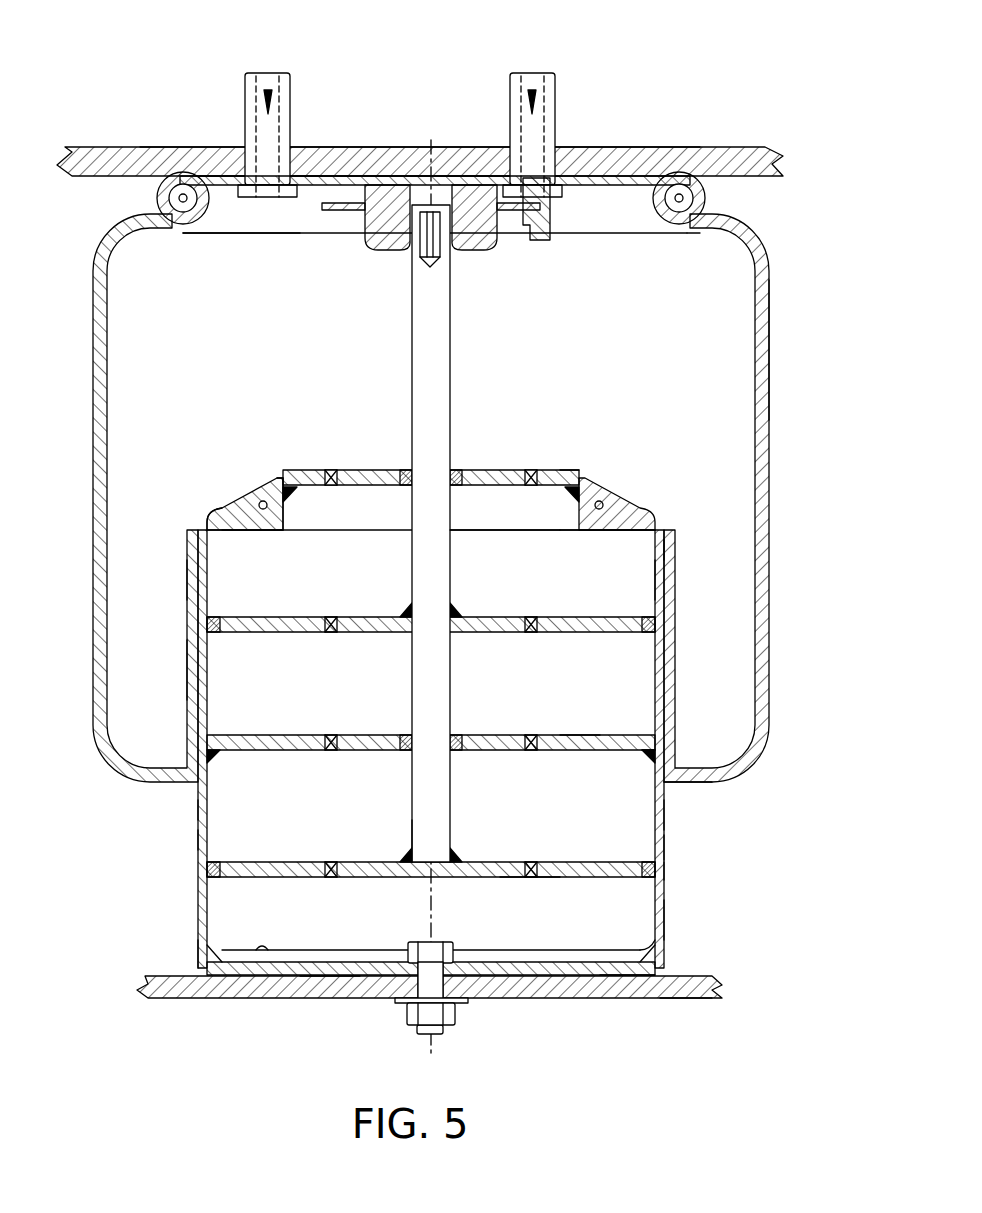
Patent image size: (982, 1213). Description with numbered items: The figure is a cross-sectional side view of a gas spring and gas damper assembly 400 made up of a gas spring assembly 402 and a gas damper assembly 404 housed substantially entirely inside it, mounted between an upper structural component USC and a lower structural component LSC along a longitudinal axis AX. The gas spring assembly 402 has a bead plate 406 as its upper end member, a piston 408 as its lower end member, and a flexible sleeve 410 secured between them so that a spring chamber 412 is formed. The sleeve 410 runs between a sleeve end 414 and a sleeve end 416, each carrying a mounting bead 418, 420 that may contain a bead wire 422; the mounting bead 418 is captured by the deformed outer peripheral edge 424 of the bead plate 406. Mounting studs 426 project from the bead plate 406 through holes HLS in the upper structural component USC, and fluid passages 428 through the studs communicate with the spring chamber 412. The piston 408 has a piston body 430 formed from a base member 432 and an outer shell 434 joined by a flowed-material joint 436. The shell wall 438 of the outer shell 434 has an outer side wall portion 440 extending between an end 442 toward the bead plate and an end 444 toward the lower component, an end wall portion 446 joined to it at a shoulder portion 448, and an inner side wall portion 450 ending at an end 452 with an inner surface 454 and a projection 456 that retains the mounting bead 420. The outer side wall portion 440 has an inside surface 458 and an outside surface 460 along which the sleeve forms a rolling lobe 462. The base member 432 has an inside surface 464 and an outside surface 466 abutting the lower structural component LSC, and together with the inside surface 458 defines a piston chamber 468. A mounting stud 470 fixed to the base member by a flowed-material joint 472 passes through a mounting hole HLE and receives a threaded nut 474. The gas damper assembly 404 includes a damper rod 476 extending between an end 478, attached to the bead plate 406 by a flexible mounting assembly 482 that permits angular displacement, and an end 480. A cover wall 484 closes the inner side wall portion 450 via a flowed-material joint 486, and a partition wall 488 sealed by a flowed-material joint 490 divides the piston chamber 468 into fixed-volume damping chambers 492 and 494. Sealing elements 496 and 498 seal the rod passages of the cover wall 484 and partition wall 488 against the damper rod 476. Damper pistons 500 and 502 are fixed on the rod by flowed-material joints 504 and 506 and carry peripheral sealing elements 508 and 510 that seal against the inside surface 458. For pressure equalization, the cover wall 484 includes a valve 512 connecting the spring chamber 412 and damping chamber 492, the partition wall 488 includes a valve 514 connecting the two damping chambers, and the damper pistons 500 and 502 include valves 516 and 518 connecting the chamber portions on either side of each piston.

The gas spring and gas damper assembly 400 is at (772, 272).
The gas spring assembly 402 is at (92, 385).
The gas damper assembly 404 is at (196, 836).
The bead plate 406 is at (647, 160).
The piston 408 is at (667, 847).
The flexible spring member (flexible sleeve) 410 is at (771, 485).
The spring chamber 412 is at (766, 305).
The sleeve end 414 is at (660, 255).
The sleeve end 416 is at (677, 505).
The mounting bead 418 is at (678, 180).
The mounting bead 420 is at (614, 506).
The bead wire 422 is at (704, 205).
The outer peripheral edge 424 is at (158, 205).
The mounting studs 426 is at (290, 95).
The fluid passage 428 is at (268, 82).
The piston body 430 is at (667, 921).
The base member 432 is at (540, 970).
The outer shell 434 is at (196, 808).
The flowed-material joint 436 is at (653, 972).
The shell wall 438 is at (190, 680).
The outer side wall portion 440 is at (198, 913).
The end 442 is at (186, 565).
The end 444 is at (196, 951).
The end wall portion 446 is at (235, 510).
The curved or shoulder portion 448 is at (200, 524).
The inner side wall portion 450 is at (281, 532).
The end 452 is at (282, 478).
The inner surface 454 is at (528, 526).
The projection 456 is at (281, 482).
The inside surface 458 is at (666, 812).
The outside surface 460 is at (648, 934).
The rolling lobe 462 is at (712, 775).
The inside surface 464 is at (262, 952).
The outside surface 466 is at (333, 978).
The piston chamber 468 is at (690, 987).
The mounting stud 470 is at (450, 1010).
The flowed-material joint 472 is at (452, 948).
The threaded nut 474 is at (447, 1022).
The damper rod 476 is at (412, 365).
The end 478 is at (400, 302).
The end 480 is at (466, 815).
The flexible mounting assembly 482 is at (485, 275).
The cover wall 484 is at (515, 470).
The flowed-material joint 486 is at (578, 470).
The partition wall 488 is at (575, 735).
The flowed-material joint 490 is at (641, 760).
The damping chamber 492 is at (642, 580).
The damping chamber 494 is at (666, 866).
The sealing element 496 is at (460, 470).
The sealing element 498 is at (462, 735).
The damper piston 500 is at (528, 540).
The damper piston 502 is at (530, 888).
The flowed-material joint 504 is at (462, 615).
The flowed-material joint 506 is at (460, 860).
The sealing element 508 is at (222, 634).
The sealing element 510 is at (222, 879).
The valve 512 is at (331, 470).
The valve 514 is at (337, 617).
The valve 516 is at (331, 735).
The valve 518 is at (331, 862).
The upper structural component USC is at (132, 160).
The lower structural component LSC is at (192, 992).
The holes HLS is at (305, 150).
The mounting hole HLE is at (400, 992).
The longitudinal axis AX is at (428, 1045).